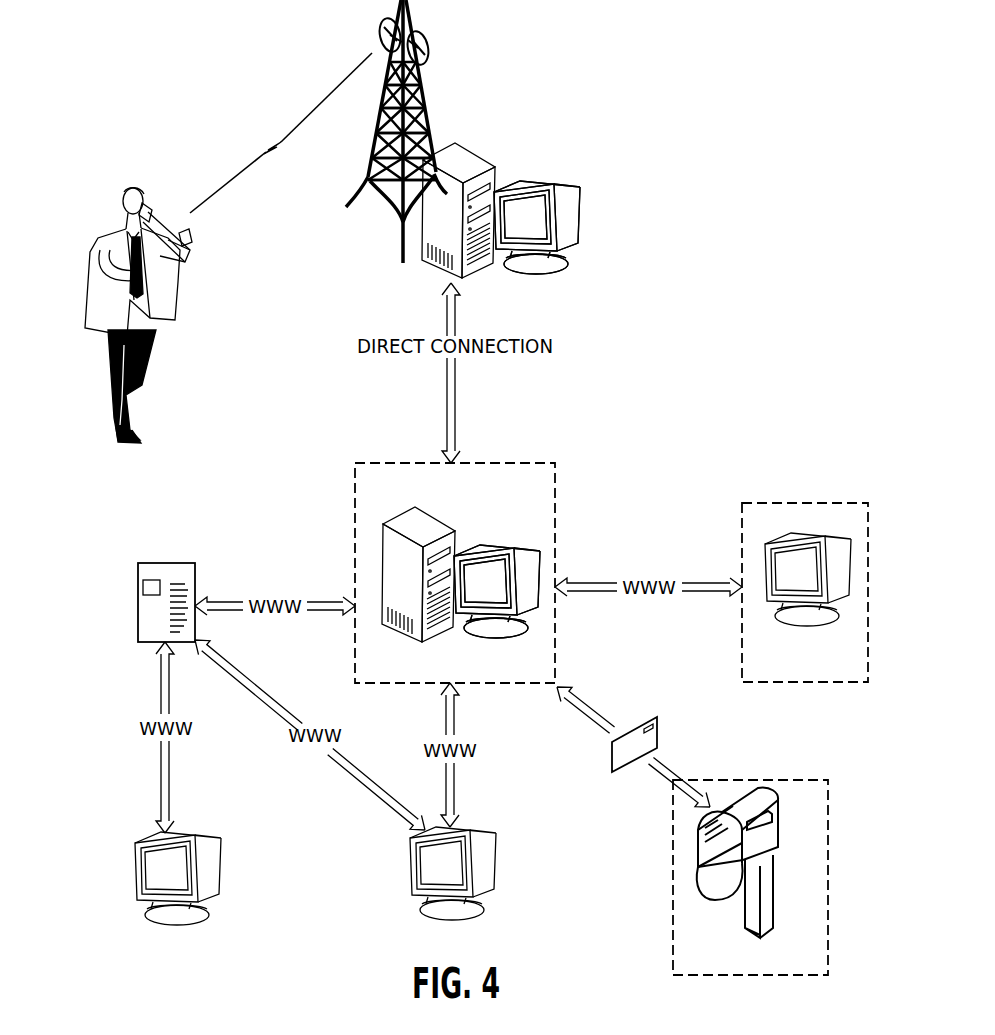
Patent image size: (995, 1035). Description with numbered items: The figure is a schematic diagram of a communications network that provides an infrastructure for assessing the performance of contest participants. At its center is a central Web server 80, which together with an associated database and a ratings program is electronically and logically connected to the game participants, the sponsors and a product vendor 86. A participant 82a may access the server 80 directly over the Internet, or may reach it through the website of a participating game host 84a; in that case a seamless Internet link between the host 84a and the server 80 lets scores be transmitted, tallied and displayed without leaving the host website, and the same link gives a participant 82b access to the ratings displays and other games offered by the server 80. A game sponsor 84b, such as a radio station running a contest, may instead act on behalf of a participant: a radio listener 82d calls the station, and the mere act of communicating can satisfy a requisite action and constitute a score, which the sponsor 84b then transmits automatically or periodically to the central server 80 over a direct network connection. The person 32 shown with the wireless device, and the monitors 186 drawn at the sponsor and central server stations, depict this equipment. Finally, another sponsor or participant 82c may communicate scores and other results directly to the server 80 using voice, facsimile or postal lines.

The user 32 is at (100, 303).
The participant 82d is at (187, 245).
The game sponsor 84b is at (520, 137).
The monitor 186 is at (527, 233).
The central Web server 80 is at (547, 466).
The participating game host 84a is at (170, 563).
The participant 82b is at (197, 833).
The participant 82a is at (478, 832).
The product vendor 86 is at (768, 546).
The participant 82c is at (810, 786).